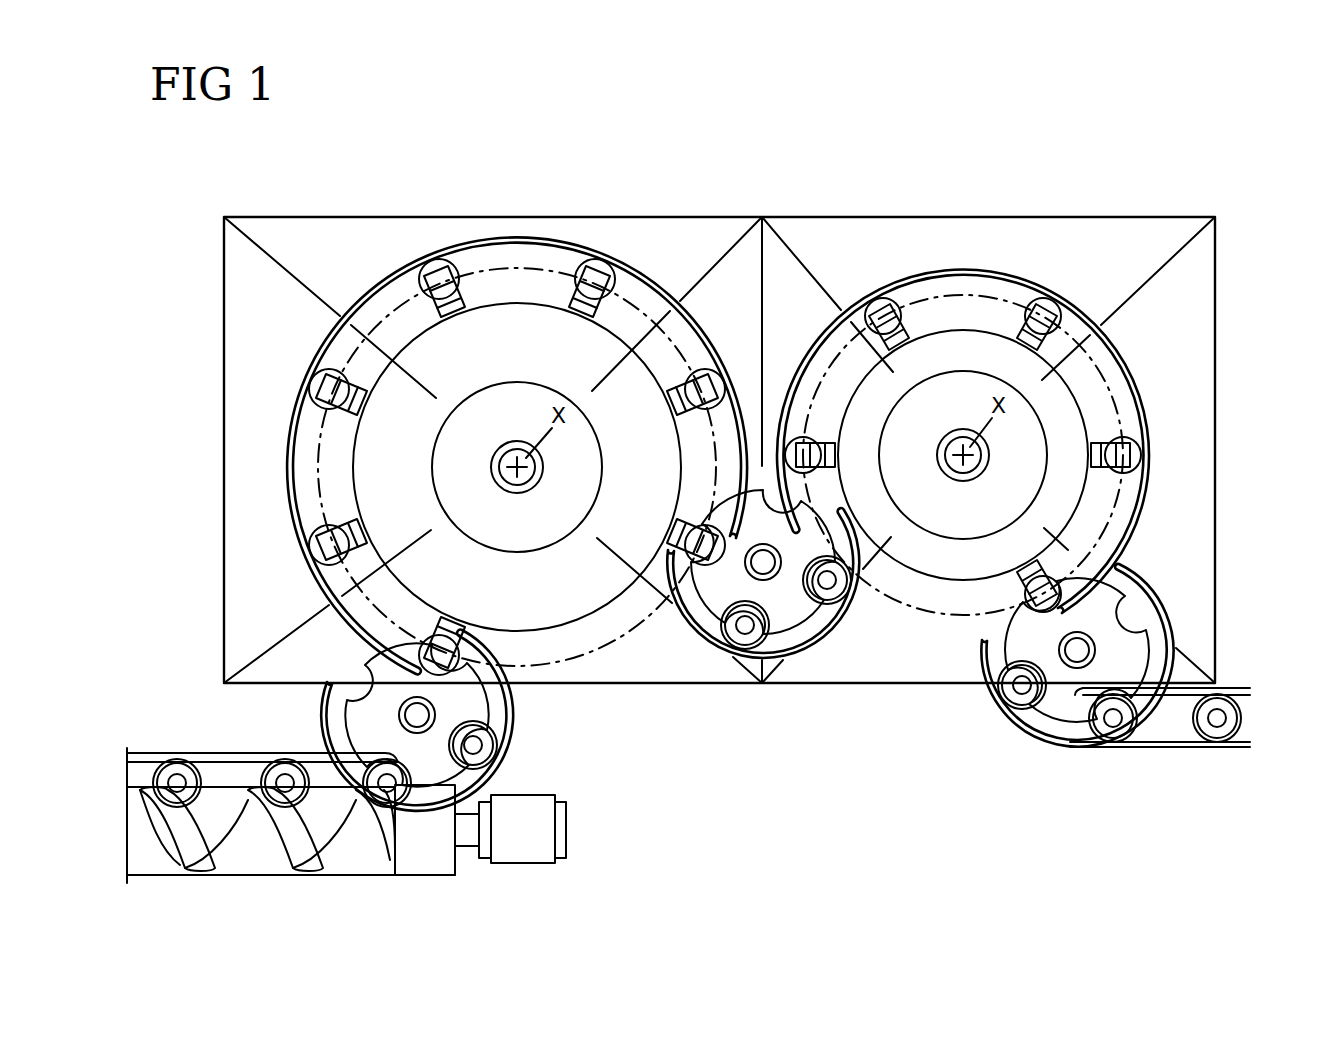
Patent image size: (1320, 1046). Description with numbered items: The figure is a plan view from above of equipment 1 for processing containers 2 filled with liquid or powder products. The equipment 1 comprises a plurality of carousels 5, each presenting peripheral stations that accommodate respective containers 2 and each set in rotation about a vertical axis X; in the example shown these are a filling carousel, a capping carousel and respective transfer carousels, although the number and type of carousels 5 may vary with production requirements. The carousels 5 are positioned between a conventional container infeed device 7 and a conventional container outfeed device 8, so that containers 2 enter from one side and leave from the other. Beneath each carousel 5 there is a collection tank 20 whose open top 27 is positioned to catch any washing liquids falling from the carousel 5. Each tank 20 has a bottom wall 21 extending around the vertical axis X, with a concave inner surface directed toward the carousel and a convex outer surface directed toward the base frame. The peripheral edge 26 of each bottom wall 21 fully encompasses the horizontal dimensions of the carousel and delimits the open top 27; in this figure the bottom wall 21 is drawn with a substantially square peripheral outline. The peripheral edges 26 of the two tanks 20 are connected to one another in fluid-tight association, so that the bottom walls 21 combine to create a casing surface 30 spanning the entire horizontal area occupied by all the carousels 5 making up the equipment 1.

The equipment 1 is at (1163, 190).
The containers 2 is at (438, 262).
The carousel 5 is at (368, 284).
The container infeed device 7 is at (508, 752).
The container outfeed device 8 is at (1195, 668).
The collection tank 20 is at (228, 563).
The bottom wall 21 is at (255, 272).
The peripheral edge 26 is at (704, 217).
The open top 27 is at (256, 402).
The casing surface 30 is at (800, 260).